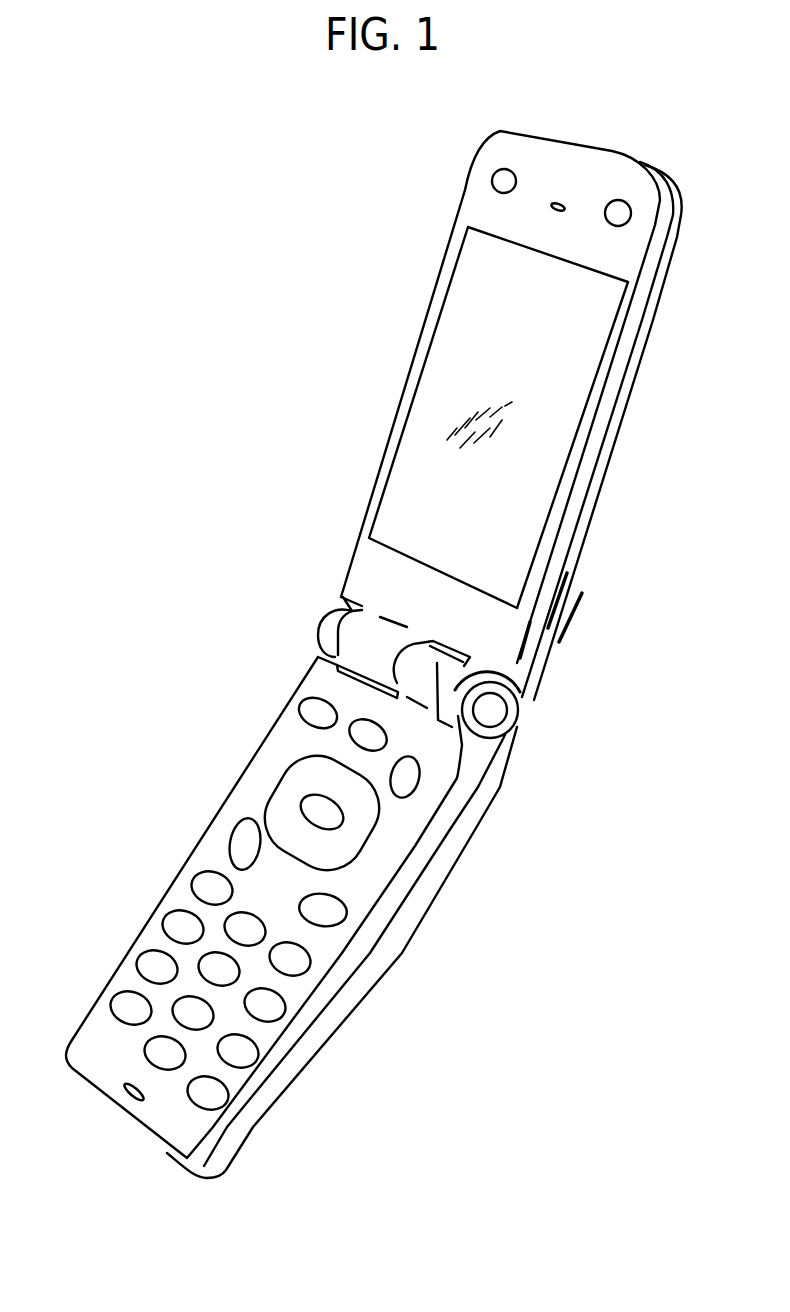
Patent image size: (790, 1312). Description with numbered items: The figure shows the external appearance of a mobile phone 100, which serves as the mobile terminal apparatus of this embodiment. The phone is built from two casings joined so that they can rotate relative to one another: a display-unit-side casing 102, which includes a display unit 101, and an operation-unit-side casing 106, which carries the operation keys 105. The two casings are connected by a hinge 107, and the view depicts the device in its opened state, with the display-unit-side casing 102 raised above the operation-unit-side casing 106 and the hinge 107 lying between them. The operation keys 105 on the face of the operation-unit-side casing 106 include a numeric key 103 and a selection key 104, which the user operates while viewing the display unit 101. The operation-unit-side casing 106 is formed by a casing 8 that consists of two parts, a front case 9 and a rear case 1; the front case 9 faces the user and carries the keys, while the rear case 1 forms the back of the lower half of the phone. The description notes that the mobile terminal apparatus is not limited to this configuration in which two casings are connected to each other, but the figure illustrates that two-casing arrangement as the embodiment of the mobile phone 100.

The mobile phone 100 is at (402, 209).
The display unit 101 is at (448, 338).
The display-unit-side casing 102 is at (378, 470).
The numeric key 103 is at (282, 1015).
The selection key 104 is at (337, 912).
The operation keys 105 is at (290, 992).
The operation-unit-side casing 106 is at (228, 792).
The casing 8 is at (268, 915).
The hinge 107 is at (531, 716).
The rear case 1 is at (455, 840).
The front case 9 is at (400, 883).